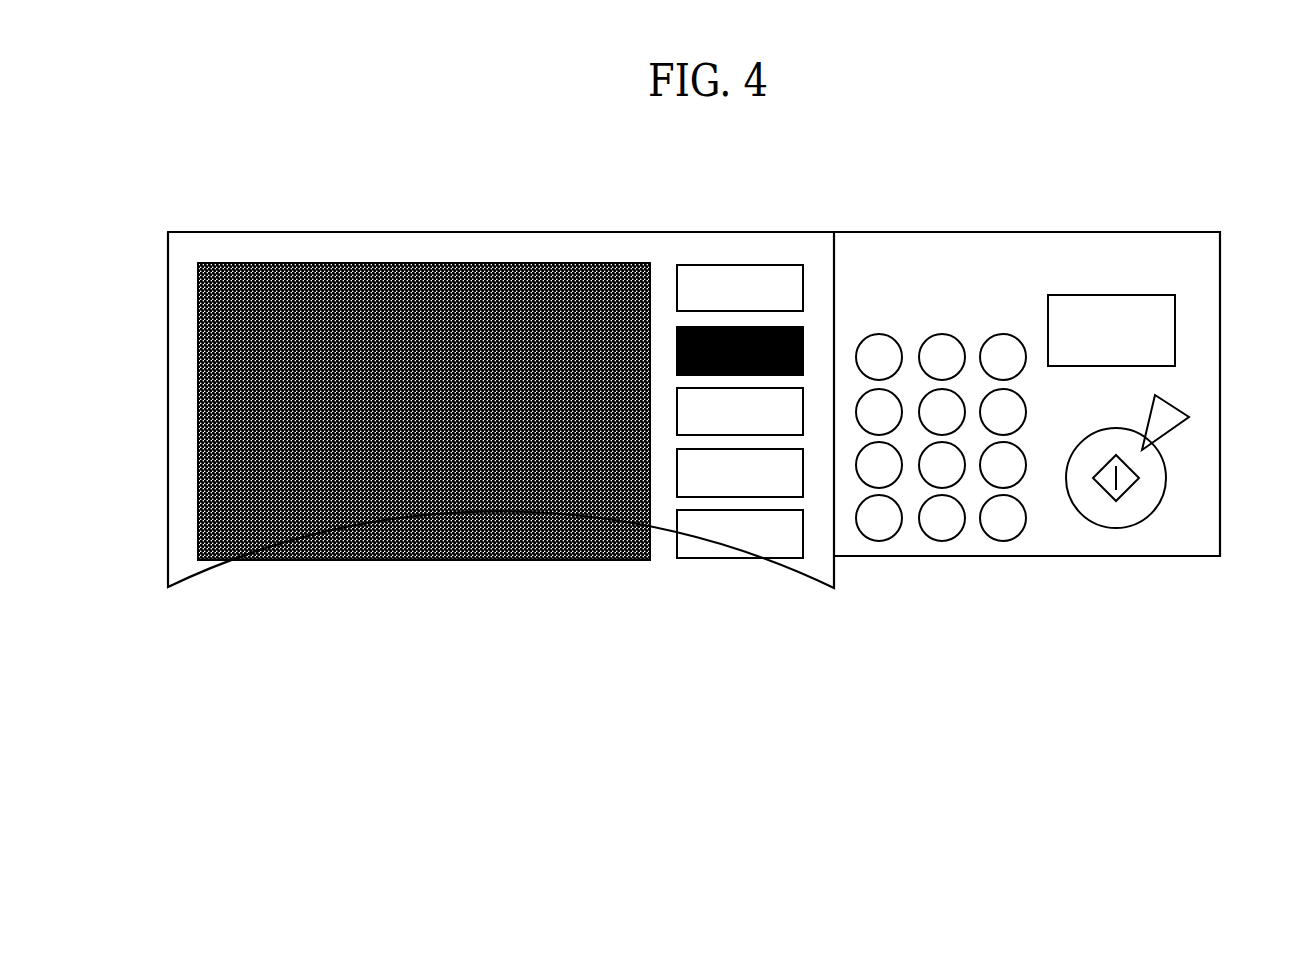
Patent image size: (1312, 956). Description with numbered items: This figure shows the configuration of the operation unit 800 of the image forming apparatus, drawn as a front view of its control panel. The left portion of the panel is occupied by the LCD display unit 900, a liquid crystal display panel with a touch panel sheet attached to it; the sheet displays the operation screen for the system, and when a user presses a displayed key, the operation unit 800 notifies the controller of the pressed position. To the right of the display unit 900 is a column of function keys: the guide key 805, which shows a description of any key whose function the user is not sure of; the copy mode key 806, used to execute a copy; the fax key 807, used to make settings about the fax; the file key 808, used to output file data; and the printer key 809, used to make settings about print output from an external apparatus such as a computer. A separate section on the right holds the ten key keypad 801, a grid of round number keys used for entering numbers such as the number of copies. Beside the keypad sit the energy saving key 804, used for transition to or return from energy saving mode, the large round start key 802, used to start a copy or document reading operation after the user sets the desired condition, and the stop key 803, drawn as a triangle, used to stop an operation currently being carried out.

The operation unit 800 is at (430, 263).
The LCD display unit 900 is at (430, 560).
The guide key 805 is at (735, 265).
The copy mode key 806 is at (797, 327).
The fax key 807 is at (677, 412).
The file key 808 is at (803, 473).
The printer key 809 is at (722, 558).
The ten key keypad 801 is at (1023, 325).
The energy saving key 804 is at (1102, 295).
The start key 802 is at (1092, 435).
The stop key 803 is at (1173, 400).